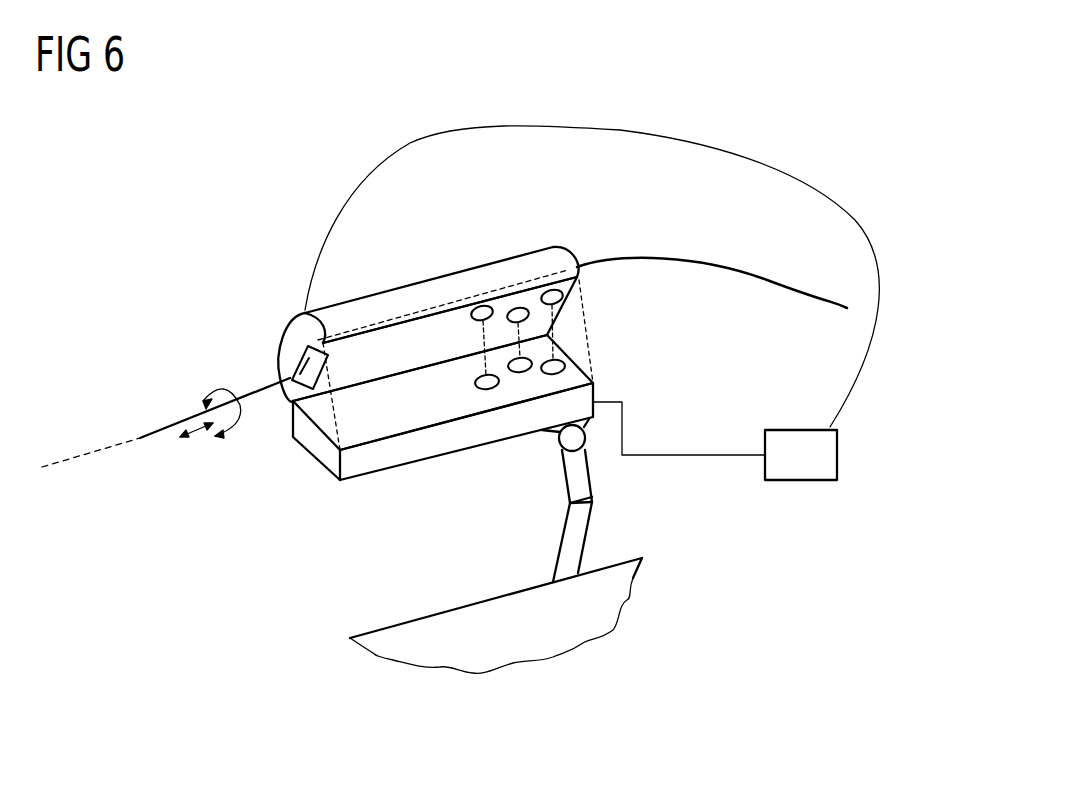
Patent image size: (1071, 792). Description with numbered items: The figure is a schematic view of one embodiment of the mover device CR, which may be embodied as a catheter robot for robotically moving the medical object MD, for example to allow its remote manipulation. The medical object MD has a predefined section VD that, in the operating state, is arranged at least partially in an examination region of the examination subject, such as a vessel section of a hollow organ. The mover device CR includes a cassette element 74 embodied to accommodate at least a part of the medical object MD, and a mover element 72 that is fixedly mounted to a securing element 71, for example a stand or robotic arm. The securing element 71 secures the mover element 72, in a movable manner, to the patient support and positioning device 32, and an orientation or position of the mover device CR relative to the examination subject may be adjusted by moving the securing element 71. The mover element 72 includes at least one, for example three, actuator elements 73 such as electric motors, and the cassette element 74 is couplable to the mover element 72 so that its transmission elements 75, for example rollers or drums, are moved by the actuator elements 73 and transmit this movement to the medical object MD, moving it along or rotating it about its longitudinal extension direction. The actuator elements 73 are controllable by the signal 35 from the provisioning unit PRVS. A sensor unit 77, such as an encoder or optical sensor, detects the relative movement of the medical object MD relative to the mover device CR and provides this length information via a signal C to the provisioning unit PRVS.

The patient support and positioning device 32 is at (633, 600).
The signal 35 is at (730, 457).
The securing element 71 is at (593, 483).
The mover element 72 is at (593, 390).
The actuator element 73 is at (553, 374).
The cassette element 74 is at (447, 273).
The transmission element 75 is at (482, 306).
The sensor unit 77 is at (310, 380).
The signal C is at (707, 143).
The mover device CR is at (297, 272).
The medical object MD is at (793, 293).
The predefined section VD is at (53, 462).
The provisioning unit PRVS is at (837, 455).